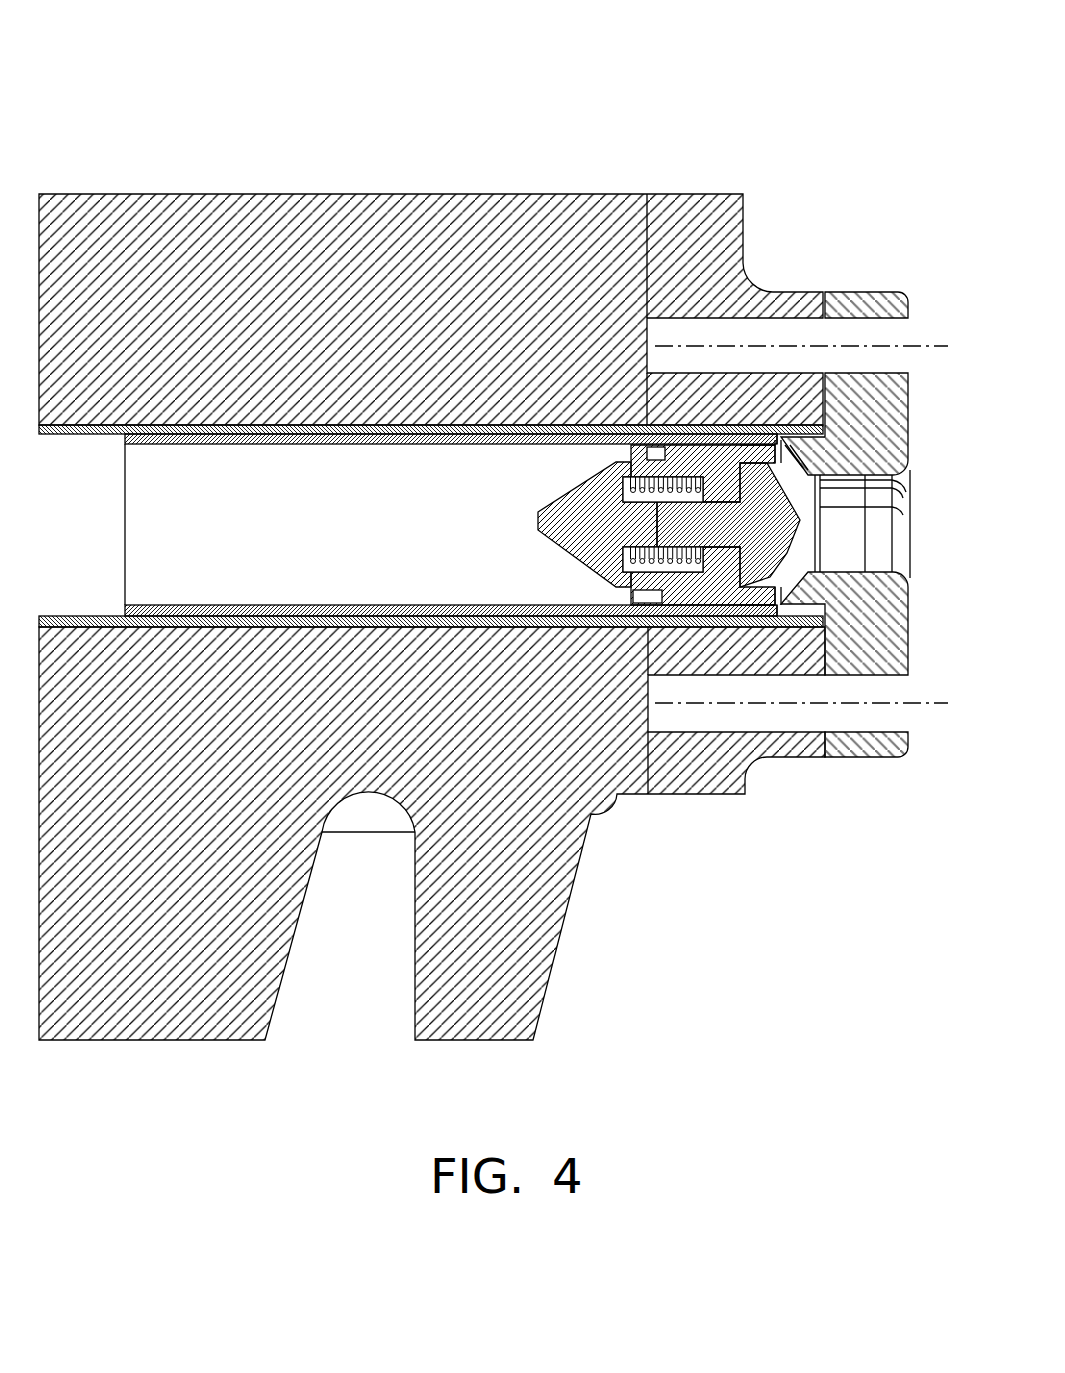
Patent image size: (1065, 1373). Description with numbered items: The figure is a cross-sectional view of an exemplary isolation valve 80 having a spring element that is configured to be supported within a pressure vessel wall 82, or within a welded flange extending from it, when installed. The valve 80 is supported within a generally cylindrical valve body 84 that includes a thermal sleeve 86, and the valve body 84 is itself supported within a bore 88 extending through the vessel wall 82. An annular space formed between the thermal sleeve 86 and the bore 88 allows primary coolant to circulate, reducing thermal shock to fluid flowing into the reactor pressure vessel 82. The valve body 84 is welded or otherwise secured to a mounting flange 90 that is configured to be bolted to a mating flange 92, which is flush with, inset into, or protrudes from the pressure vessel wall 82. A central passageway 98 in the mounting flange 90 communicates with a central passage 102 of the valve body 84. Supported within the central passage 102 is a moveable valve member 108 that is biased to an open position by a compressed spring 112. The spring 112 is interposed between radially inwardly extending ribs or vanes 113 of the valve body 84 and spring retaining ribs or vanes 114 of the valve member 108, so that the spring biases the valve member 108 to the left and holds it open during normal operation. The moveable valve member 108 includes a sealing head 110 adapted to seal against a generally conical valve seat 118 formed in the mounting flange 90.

The isolation valve 80 is at (647, 558).
The pressure vessel wall 82 is at (162, 237).
The valve body 84 is at (749, 300).
The thermal sleeve 86 is at (383, 440).
The bore 88 is at (268, 412).
The mounting flange 90 is at (877, 617).
The mating flange 92 is at (717, 425).
The central passageway 98 is at (878, 539).
The central passage 102 is at (633, 568).
The moveable valve member 108 is at (718, 533).
The sealing head 110 is at (762, 515).
The compressed spring 112 is at (648, 290).
The radially inwardly extending ribs or vanes 113 is at (745, 442).
The spring retaining ribs or vanes 114 is at (545, 540).
The conical valve seat 118 is at (797, 463).